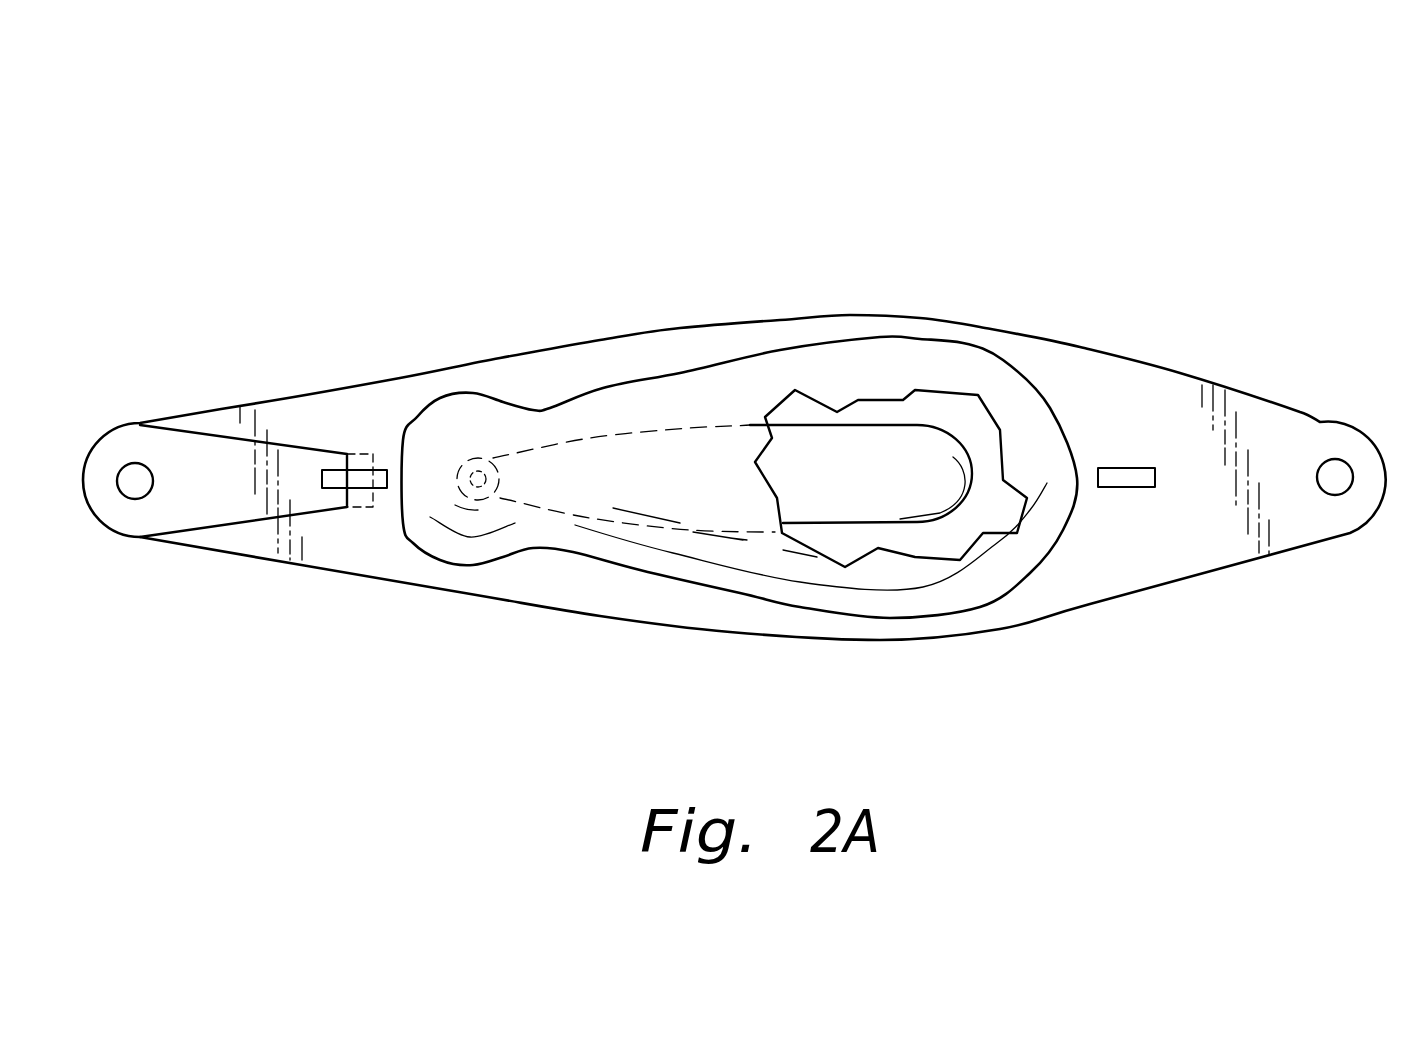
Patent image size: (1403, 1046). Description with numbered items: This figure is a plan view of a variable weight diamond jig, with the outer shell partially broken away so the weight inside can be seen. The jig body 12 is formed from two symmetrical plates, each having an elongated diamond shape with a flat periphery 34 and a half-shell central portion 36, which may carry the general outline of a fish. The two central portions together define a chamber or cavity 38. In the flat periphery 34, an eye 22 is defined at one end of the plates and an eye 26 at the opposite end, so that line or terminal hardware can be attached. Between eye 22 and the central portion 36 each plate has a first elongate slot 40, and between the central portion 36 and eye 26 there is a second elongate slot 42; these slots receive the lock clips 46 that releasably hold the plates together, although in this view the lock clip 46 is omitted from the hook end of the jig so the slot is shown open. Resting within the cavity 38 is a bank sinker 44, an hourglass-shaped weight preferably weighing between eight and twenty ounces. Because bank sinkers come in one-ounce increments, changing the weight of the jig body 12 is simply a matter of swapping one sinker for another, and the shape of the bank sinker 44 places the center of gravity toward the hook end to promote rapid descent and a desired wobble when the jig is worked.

The jig body 12 is at (355, 160).
The eye 22 is at (117, 464).
The eye 26 is at (1335, 458).
The flat periphery 34 is at (1163, 558).
The half-shell central portion 36 is at (822, 388).
The cavity 38 is at (975, 412).
The first elongate slot 40 is at (383, 460).
The second elongate slot 42 is at (1112, 487).
The bank sinker 44 is at (897, 488).
The lock clip 46 is at (205, 450).